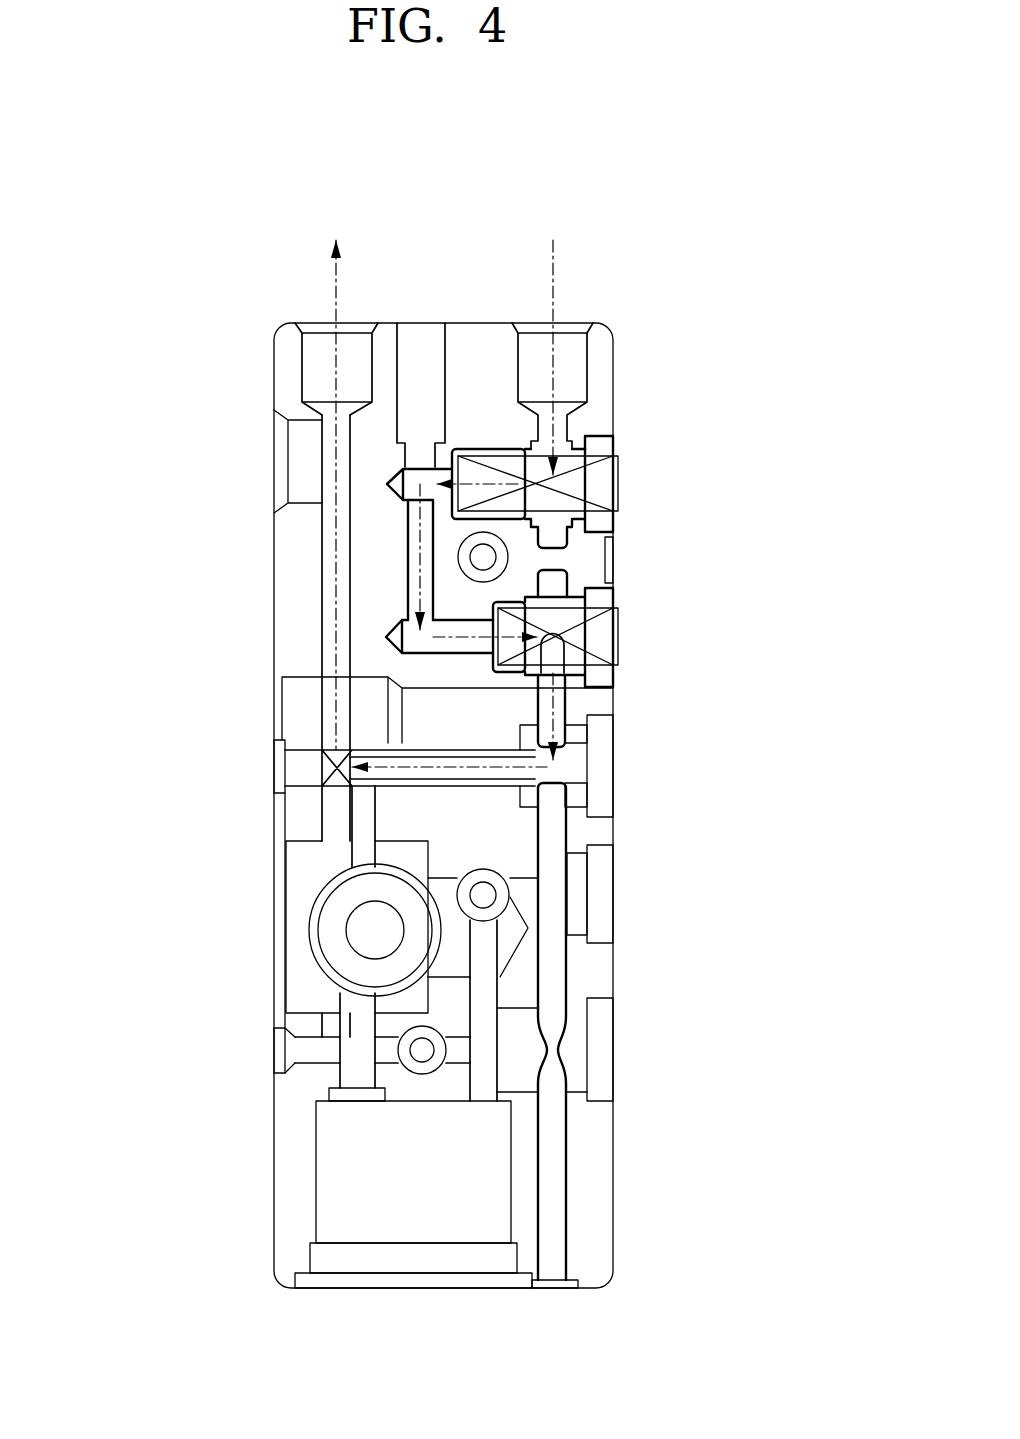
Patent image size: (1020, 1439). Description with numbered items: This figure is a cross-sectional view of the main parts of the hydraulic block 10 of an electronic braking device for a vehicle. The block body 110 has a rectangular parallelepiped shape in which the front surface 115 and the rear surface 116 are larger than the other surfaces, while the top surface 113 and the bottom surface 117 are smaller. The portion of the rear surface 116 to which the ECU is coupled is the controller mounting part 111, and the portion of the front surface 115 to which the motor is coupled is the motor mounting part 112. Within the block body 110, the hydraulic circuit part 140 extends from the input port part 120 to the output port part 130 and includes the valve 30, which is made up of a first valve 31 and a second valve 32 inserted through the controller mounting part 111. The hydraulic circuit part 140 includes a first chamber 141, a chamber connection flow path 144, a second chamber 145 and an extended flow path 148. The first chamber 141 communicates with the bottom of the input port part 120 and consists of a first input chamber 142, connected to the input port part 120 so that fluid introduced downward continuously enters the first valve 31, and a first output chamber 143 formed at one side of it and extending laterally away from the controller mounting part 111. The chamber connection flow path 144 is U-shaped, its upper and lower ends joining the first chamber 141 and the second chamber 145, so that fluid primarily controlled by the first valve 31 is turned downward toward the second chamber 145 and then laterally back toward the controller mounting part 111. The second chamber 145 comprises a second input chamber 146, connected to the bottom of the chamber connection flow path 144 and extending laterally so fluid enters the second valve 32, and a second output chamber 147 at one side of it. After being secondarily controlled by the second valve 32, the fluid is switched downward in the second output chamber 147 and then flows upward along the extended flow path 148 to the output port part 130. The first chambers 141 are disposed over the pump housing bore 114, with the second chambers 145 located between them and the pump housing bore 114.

The hydraulic block 10 is at (622, 268).
The block body 110 is at (274, 597).
The top surface 113 is at (492, 323).
The output port part 130 is at (315, 373).
The input port part 120 is at (568, 380).
The extended flow path 148 is at (330, 550).
The first valve 31 is at (497, 455).
The first chamber 141 is at (617, 498).
The first input chamber 142 is at (578, 488).
The first output chamber 143 is at (507, 507).
The hydraulic circuit part 140 is at (602, 445).
The chamber connection flow path 144 is at (426, 555).
The second chamber 145 is at (638, 633).
The second input chamber 146 is at (505, 622).
The second output chamber 147 is at (577, 654).
The valve 30 is at (627, 665).
The second valve 32 is at (565, 640).
The controller mounting part 111 is at (613, 785).
The rear surface 116 is at (655, 1026).
The motor mounting part 112 is at (274, 903).
The front surface 115 is at (334, 985).
The pump housing bore 114 is at (370, 925).
The bottom surface 117 is at (593, 1288).